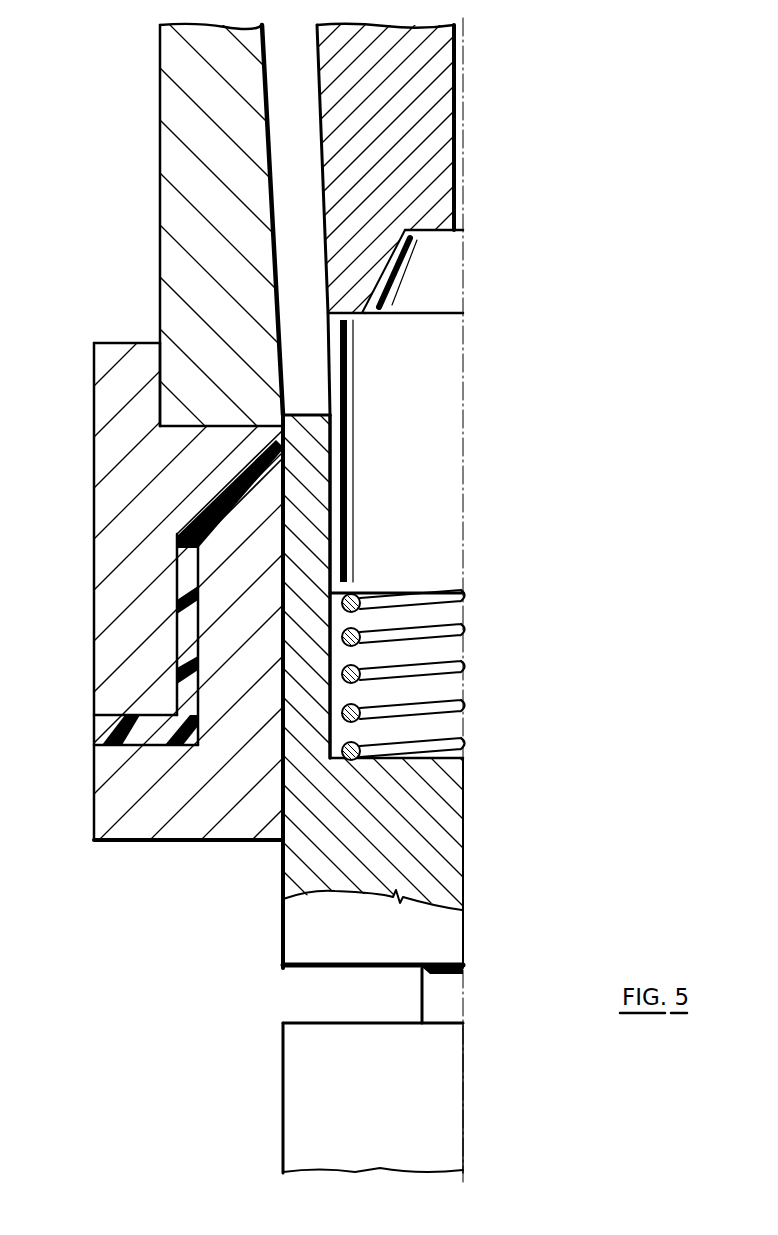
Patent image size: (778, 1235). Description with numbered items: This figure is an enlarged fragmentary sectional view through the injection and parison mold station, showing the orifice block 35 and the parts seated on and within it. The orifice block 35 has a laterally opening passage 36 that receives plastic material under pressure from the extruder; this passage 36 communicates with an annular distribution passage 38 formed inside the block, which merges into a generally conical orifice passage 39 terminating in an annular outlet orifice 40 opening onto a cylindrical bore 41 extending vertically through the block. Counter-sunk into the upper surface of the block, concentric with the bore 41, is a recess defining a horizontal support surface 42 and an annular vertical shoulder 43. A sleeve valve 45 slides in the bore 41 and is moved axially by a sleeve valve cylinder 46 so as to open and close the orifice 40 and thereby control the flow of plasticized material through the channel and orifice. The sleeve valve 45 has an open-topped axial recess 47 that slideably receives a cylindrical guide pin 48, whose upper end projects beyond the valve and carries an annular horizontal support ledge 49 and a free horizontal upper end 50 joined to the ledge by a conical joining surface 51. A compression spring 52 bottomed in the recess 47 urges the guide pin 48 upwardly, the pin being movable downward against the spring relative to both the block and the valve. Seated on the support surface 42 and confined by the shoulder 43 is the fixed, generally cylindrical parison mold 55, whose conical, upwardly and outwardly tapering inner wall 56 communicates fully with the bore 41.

The orifice block 35 is at (128, 814).
The laterally opening passage 36 is at (132, 745).
The annular distribution passage 38 is at (175, 650).
The orifice passage 39 is at (203, 515).
The annular outlet orifice 40 is at (283, 414).
The cylindrical bore 41 is at (285, 821).
The horizontal support surface 42 is at (165, 420).
The annular vertical shoulder 43 is at (162, 348).
The sleeve valve 45 is at (440, 858).
The sleeve valve cylinder 46 is at (297, 1133).
The axial recess 47 is at (345, 538).
The guide pin 48 is at (433, 488).
The annular horizontal support ledge 49 is at (354, 310).
The free horizontal upper end 50 is at (428, 228).
The conical joining surface 51 is at (389, 266).
The compression spring 52 is at (450, 648).
The parison mold 55 is at (180, 113).
The inner wall 56 is at (268, 216).